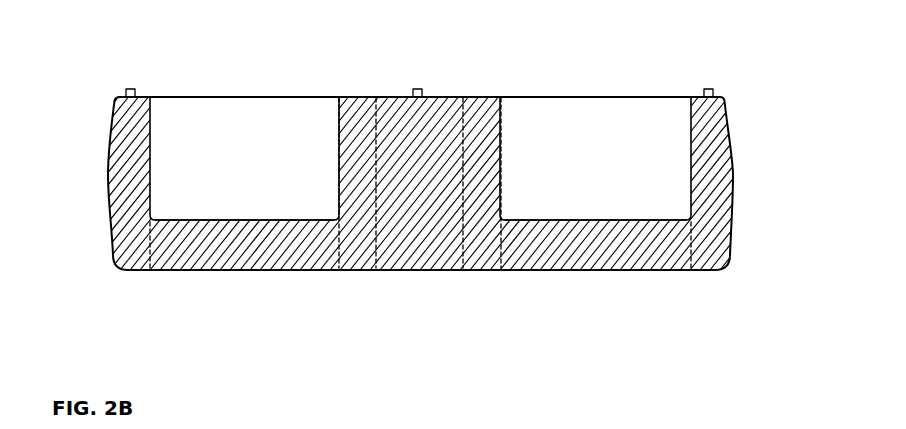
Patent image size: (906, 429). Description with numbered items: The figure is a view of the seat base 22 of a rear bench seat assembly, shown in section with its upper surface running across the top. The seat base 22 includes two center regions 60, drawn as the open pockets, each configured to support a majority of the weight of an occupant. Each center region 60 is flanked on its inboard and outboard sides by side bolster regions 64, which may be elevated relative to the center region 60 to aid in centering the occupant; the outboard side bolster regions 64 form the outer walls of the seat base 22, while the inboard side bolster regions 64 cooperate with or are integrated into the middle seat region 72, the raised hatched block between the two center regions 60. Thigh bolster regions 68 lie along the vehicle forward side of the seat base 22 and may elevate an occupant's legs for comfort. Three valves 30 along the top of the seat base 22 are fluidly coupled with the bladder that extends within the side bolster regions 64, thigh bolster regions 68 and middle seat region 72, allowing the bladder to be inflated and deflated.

The seat base 22 is at (78, 150).
The valve 30 is at (131, 88).
The center region 60 is at (248, 130).
The side bolster region 64 is at (108, 172).
The thigh bolster region 68 is at (267, 272).
The middle seat region 72 is at (430, 272).